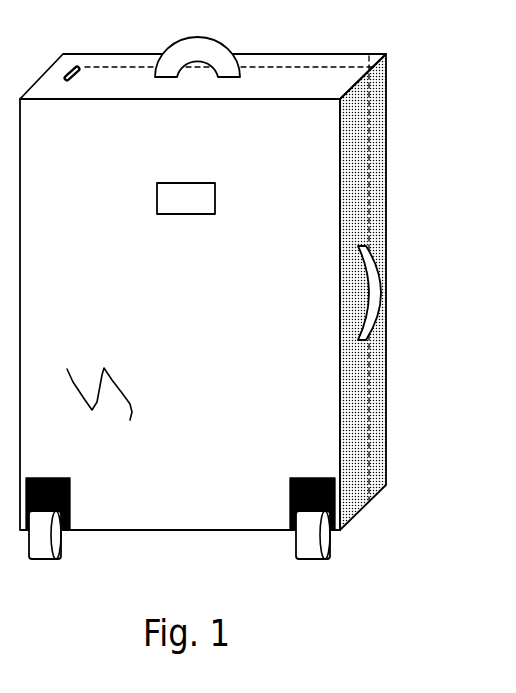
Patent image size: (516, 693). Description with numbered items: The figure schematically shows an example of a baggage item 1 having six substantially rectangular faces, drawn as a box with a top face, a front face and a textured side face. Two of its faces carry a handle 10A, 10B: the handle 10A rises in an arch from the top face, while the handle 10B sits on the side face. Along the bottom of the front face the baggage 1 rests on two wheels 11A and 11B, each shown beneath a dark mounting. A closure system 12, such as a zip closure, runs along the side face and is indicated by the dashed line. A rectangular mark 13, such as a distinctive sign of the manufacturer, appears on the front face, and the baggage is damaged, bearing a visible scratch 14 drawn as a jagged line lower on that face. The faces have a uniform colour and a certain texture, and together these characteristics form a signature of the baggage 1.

The baggage item 1 is at (425, 125).
The handle 10A is at (221, 46).
The handle 10B is at (386, 290).
The wheel 11A is at (332, 555).
The wheel 11B is at (65, 557).
The closure system 12 is at (371, 92).
The mark 13 is at (215, 203).
The scratch 14 is at (128, 392).